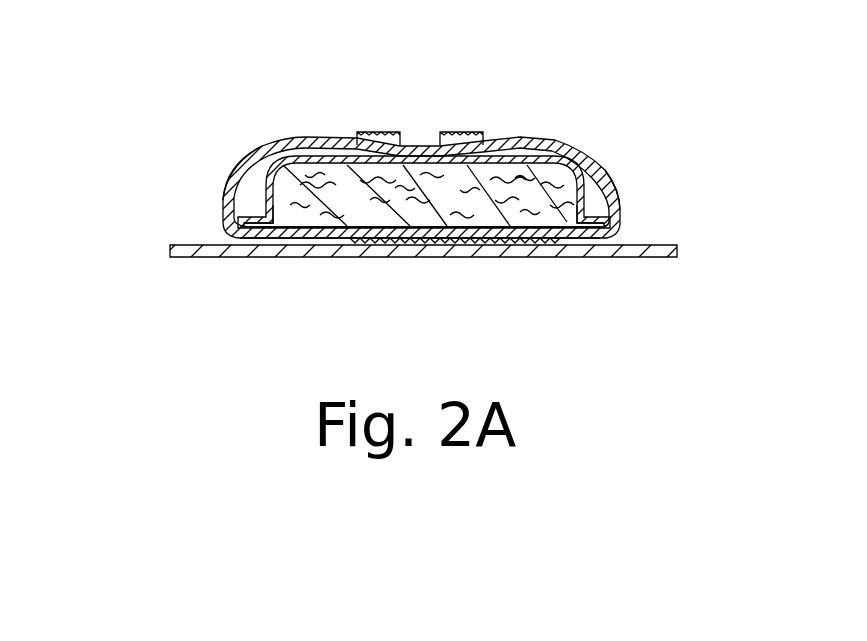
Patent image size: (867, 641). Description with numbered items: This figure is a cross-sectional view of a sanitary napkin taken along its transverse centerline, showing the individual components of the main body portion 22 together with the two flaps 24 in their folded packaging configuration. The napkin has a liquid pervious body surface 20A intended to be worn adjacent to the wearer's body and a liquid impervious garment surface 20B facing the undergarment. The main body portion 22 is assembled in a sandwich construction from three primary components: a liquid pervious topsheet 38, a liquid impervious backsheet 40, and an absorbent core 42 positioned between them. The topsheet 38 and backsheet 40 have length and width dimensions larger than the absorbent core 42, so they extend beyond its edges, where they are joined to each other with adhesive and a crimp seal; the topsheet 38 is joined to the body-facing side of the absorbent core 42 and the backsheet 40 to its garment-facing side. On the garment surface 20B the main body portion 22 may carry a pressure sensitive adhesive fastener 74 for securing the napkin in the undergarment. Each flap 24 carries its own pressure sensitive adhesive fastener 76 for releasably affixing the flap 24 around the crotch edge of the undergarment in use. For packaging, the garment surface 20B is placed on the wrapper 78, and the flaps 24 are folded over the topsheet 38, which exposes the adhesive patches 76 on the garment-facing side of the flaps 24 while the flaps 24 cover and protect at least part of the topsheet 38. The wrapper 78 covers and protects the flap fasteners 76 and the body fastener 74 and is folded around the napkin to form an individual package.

The body surface 20A is at (557, 138).
The garment surface 20B is at (333, 240).
The main body portion 22 is at (432, 92).
The flaps 24 is at (200, 163).
The topsheet 38 is at (310, 138).
The backsheet 40 is at (283, 240).
The absorbent core 42 is at (563, 240).
The pressure sensitive adhesive fastener 74 is at (483, 240).
The flap fastener 76 is at (367, 132).
The wrapper 78 is at (667, 257).